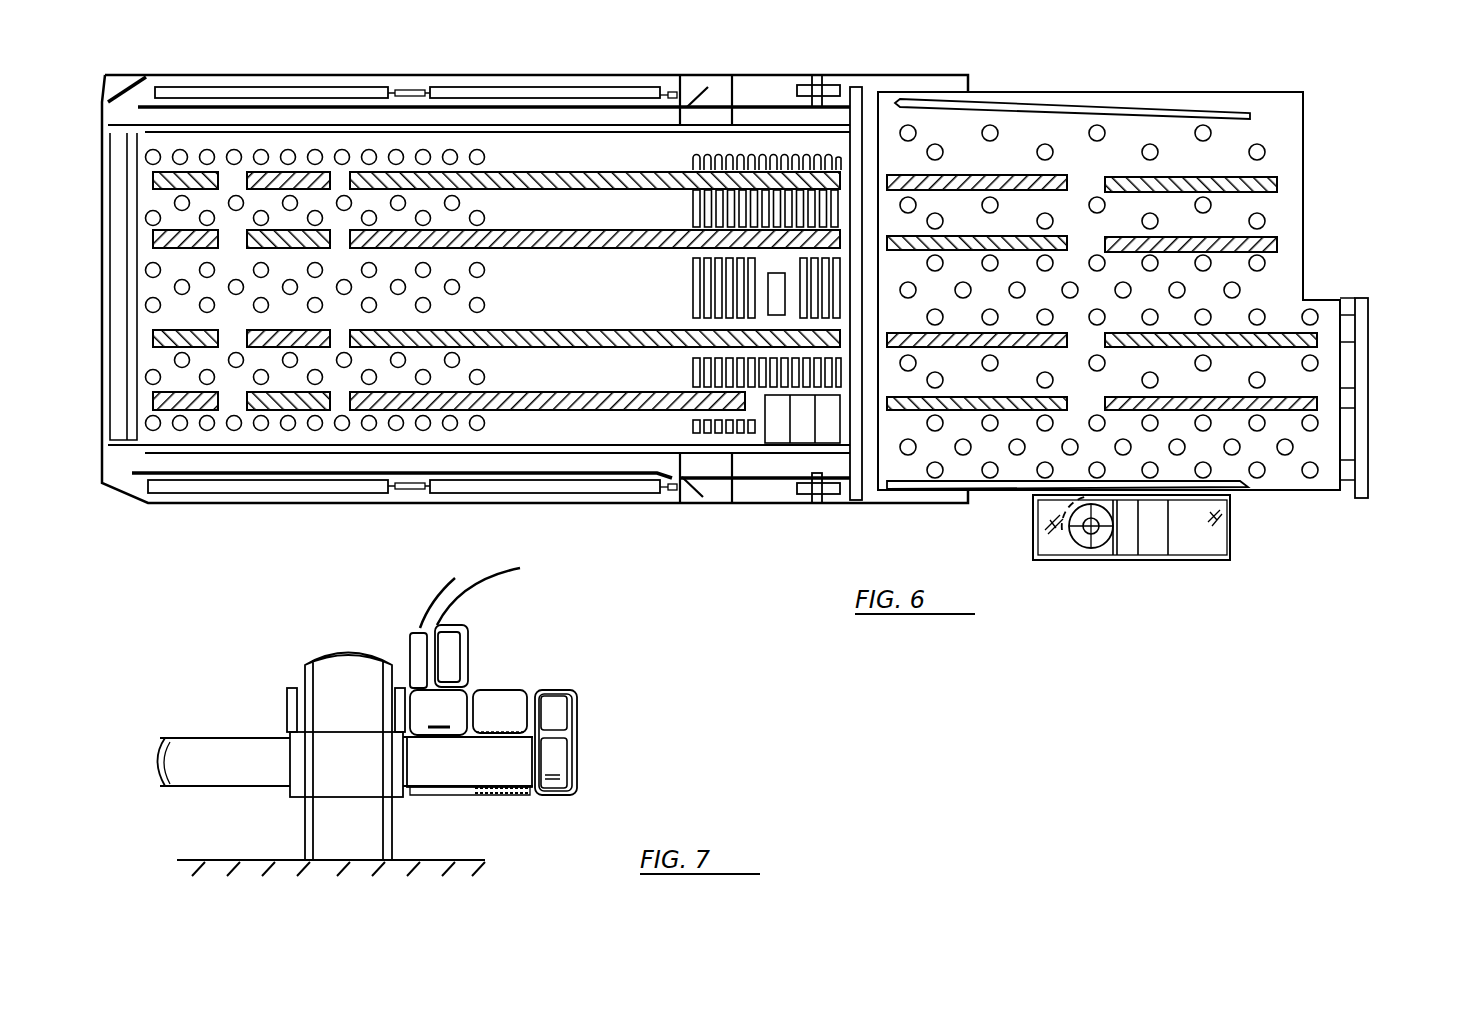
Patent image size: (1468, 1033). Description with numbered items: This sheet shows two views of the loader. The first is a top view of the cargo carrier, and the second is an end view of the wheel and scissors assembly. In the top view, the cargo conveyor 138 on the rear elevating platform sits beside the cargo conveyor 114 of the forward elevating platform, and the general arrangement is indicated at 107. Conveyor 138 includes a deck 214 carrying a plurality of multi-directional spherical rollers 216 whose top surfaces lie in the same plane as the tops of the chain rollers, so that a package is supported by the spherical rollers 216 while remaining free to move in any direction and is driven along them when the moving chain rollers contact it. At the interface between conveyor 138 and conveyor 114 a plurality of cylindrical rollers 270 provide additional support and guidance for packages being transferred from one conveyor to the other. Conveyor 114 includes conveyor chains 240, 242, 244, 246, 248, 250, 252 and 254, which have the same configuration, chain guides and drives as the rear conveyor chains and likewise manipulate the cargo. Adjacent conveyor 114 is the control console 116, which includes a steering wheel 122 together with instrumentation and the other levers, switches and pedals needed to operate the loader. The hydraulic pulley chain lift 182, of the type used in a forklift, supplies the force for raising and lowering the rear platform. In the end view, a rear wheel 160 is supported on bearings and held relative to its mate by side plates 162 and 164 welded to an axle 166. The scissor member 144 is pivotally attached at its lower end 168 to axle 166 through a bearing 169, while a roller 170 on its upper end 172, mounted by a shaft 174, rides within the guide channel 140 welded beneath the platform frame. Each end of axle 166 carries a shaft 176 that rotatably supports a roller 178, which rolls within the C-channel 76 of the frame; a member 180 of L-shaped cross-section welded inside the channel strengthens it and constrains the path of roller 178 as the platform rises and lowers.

In FIG. 6, the welding torch cleaning apparatus 107 is at (1368, 32).
In FIG. 6, the cargo conveyor 114 is at (1330, 242).
In FIG. 6, the control console 116 is at (1124, 546).
In FIG. 6, the steering wheel 122 is at (1102, 553).
In FIG. 6, the cargo conveyor 138 is at (147, 321).
In FIG. 6, the hydraulic pulley chain lift 182 is at (816, 83).
In FIG. 6, the deck 214 is at (148, 436).
In FIG. 6, the multi-directional spherical rollers 216 is at (486, 150).
In FIG. 6, the conveyor chain 240 is at (1280, 176).
In FIG. 6, the conveyor chain 242 is at (1280, 248).
In FIG. 6, the conveyor chain 244 is at (1318, 341).
In FIG. 6, the conveyor chain 246 is at (1320, 408).
In FIG. 6, the conveyor chain 248 is at (1063, 177).
In FIG. 6, the conveyor chain 250 is at (1062, 235).
In FIG. 6, the conveyor chain 252 is at (967, 345).
In FIG. 6, the conveyor chain 254 is at (893, 408).
In FIG. 6, the cylindrical rollers 270 is at (840, 205).
In FIG. 7, the C-channel 76 is at (577, 718).
In FIG. 7, the guide channel 140 is at (472, 662).
In FIG. 7, the scissor member 144 is at (455, 589).
In FIG. 7, the rear wheel 160 is at (325, 655).
In FIG. 7, the side plate 162 is at (295, 686).
In FIG. 7, the side plate 164 is at (394, 686).
In FIG. 7, the axle 166 is at (473, 778).
In FIG. 7, the lower end 168 is at (518, 688).
In FIG. 7, the bearing 169 is at (512, 790).
In FIG. 7, the roller 170 is at (452, 647).
In FIG. 7, the upper end 172 is at (503, 583).
In FIG. 7, the shaft 174 is at (450, 623).
In FIG. 7, the shaft 176 is at (537, 758).
In FIG. 7, the roller 178 is at (553, 770).
In FIG. 7, the member 180 is at (543, 712).